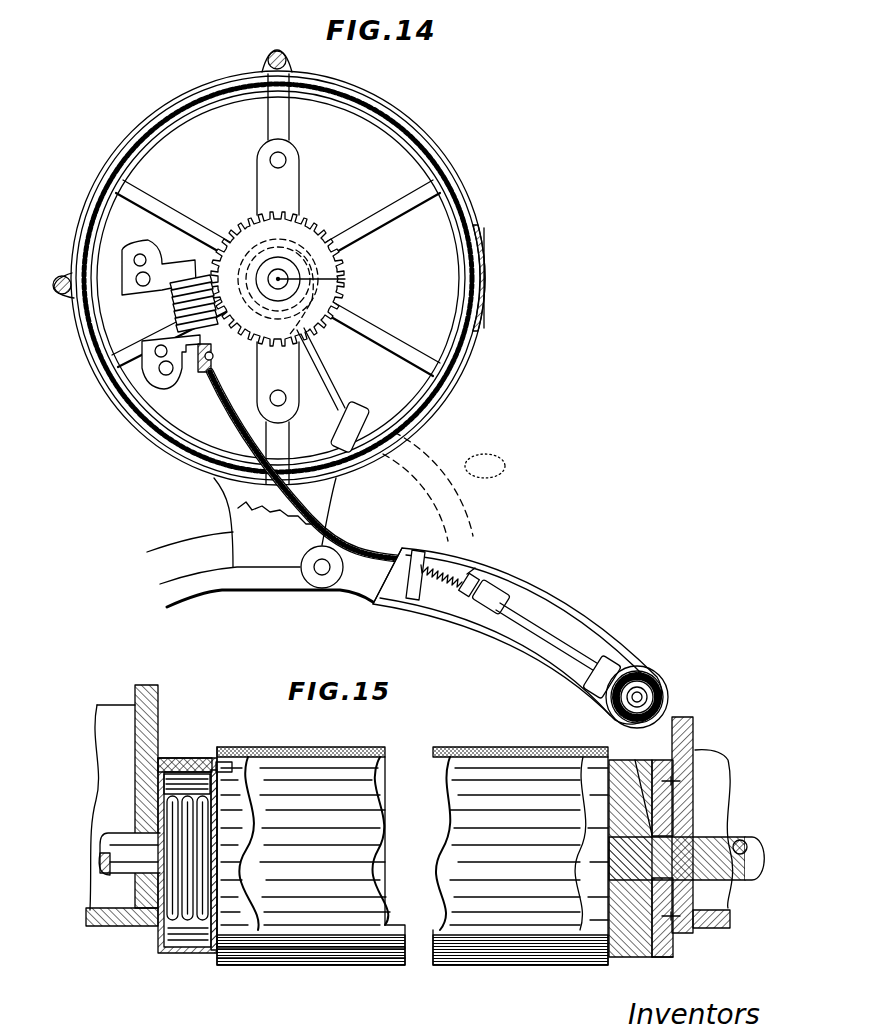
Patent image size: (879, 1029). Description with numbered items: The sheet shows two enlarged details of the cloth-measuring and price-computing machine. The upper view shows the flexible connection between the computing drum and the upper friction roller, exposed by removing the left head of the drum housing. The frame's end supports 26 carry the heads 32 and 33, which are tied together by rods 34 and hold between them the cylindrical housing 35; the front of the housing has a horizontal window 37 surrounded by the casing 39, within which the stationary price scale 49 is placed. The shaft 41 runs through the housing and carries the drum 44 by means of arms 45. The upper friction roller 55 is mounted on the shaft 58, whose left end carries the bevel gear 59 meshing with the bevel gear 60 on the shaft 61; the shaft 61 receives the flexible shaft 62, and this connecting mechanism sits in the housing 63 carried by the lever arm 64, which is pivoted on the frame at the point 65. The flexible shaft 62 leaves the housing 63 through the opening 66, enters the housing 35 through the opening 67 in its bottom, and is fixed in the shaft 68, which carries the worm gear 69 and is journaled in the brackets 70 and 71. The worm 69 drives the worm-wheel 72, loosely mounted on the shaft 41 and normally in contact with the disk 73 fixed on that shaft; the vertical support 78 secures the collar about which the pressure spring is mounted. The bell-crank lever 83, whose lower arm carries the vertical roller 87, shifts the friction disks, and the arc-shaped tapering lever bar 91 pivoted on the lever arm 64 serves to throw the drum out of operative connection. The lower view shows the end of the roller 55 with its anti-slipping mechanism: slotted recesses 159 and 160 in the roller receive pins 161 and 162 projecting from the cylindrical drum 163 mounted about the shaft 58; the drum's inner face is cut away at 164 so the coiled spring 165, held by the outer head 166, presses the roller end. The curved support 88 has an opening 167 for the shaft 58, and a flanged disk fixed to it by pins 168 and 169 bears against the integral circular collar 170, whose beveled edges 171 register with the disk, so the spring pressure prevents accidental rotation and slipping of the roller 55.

In FIG. 14, the end supports 26 is at (215, 580).
In FIG. 14, the head 32 is at (281, 523).
In FIG. 14, the head 33 is at (214, 478).
In FIG. 14, the rods 34 is at (276, 51).
In FIG. 14, the cylindrical housing 35 is at (428, 133).
In FIG. 14, the horizontal window 37 is at (488, 280).
In FIG. 14, the casing 39 is at (487, 250).
In FIG. 14, the shaft 41 is at (345, 279).
In FIG. 14, the drum 44 is at (372, 116).
In FIG. 14, the arms 45 is at (396, 348).
In FIG. 14, the stationary price scales 49 is at (470, 290).
In FIG. 15, the upper friction roller 55 is at (470, 760).
In FIG. 14, the shaft 58 is at (665, 693).
In FIG. 15, the shaft 58 is at (118, 838).
In FIG. 14, the bevel gear 59 is at (672, 703).
In FIG. 14, the bevel gear 60 is at (641, 680).
In FIG. 14, the shaft 61 is at (560, 648).
In FIG. 14, the flexible shaft 62 is at (463, 591).
In FIG. 14, the housing 63 is at (552, 600).
In FIG. 14, the lever arm 64 is at (412, 551).
In FIG. 15, the lever arm 64 is at (160, 712).
In FIG. 14, the pivot point 65 is at (322, 576).
In FIG. 14, the opening 66 is at (373, 604).
In FIG. 14, the opening 67 is at (315, 466).
In FIG. 14, the shaft 68 is at (214, 357).
In FIG. 14, the worm gear 69 is at (178, 309).
In FIG. 14, the bracket 70 is at (134, 251).
In FIG. 14, the bracket 71 is at (183, 380).
In FIG. 14, the worm-wheel 72 is at (276, 212).
In FIG. 14, the disk 73 is at (272, 286).
In FIG. 14, the vertical support 78 is at (292, 190).
In FIG. 14, the bell-crank lever 83 is at (322, 366).
In FIG. 14, the vertical roller 87 is at (360, 420).
In FIG. 15, the curved support 88 is at (696, 736).
In FIG. 14, the arc-shaped tapering lever bar 91 is at (440, 486).
In FIG. 15, the slotted recess 159 is at (232, 962).
In FIG. 15, the slotted recess 160 is at (242, 757).
In FIG. 15, the pin 161 is at (218, 962).
In FIG. 15, the pin 162 is at (232, 766).
In FIG. 15, the cylindrical drum 163 is at (190, 952).
In FIG. 15, the cut-away 164 is at (192, 756).
In FIG. 15, the coiled spring 165 is at (168, 908).
In FIG. 15, the outer head 166 is at (160, 944).
In FIG. 15, the opening 167 is at (640, 760).
In FIG. 15, the pin 168 is at (680, 780).
In FIG. 15, the pin 169 is at (690, 930).
In FIG. 15, the integral circular collar 170 is at (620, 957).
In FIG. 15, the beveled edges 171 is at (658, 957).